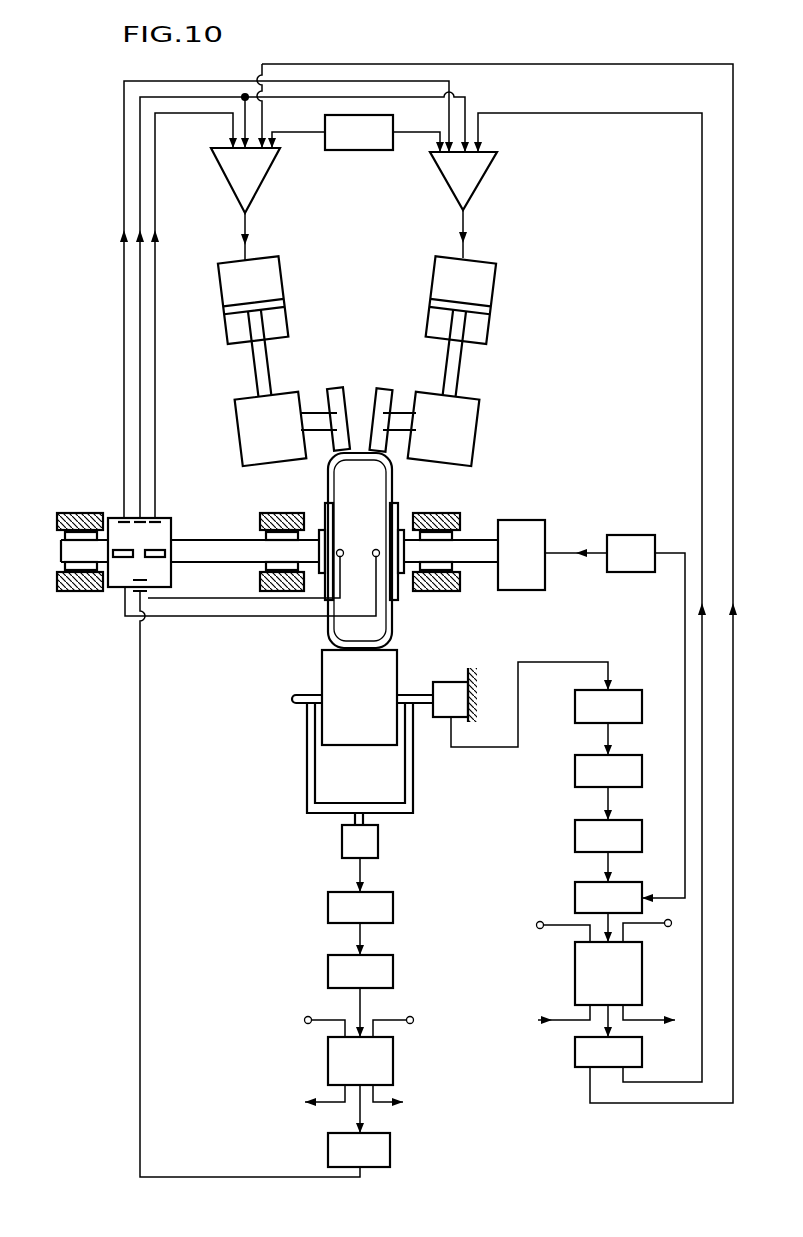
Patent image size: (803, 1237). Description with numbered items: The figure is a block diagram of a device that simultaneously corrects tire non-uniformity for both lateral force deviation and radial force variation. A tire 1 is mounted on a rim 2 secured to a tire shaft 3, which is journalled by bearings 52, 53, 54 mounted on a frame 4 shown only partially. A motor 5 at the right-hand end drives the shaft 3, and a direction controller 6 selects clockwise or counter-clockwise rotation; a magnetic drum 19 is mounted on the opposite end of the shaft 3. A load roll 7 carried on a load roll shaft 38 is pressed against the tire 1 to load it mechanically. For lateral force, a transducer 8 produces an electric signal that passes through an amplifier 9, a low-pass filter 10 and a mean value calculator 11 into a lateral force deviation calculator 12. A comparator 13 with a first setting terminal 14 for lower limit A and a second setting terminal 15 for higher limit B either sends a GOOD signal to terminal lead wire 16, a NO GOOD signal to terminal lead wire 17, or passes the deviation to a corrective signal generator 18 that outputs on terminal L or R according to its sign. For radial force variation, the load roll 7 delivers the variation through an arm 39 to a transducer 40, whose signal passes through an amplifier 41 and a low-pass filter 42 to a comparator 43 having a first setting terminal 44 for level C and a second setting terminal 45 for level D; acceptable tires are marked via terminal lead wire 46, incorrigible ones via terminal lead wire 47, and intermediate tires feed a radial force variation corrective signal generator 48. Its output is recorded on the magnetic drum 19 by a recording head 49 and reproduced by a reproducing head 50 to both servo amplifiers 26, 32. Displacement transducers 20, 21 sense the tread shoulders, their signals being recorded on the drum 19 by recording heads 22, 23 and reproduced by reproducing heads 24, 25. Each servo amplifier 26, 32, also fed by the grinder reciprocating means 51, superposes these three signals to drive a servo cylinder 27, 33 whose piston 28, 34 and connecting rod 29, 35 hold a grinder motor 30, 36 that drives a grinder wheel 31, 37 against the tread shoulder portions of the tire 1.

The tire 1 is at (387, 478).
The rim 2 is at (395, 598).
The tire shaft 3 is at (238, 545).
The frame 4 is at (75, 518).
The motor 5 is at (525, 590).
The direction controller 6 is at (636, 572).
The load roll 7 is at (397, 667).
The transducer 8 is at (450, 682).
The amplifier 9 is at (575, 713).
The low-pass filter 10 is at (575, 772).
The mean value calculator 11 is at (580, 828).
The lateral force deviation calculator 12 is at (580, 890).
The comparator 13 is at (575, 975).
The first setting terminal 14 is at (535, 930).
The second setting terminal 15 is at (665, 928).
The terminal lead wire 16 is at (538, 1020).
The terminal lead wire 17 is at (670, 1022).
The corrective signal generator 18 is at (578, 1063).
The magnetic drum 19 is at (165, 580).
The displacement transducer 20 is at (340, 550).
The displacement transducer 21 is at (374, 557).
The recording head 22 is at (118, 558).
The recording head 23 is at (160, 552).
The reproducing head 24 is at (122, 516).
The reproducing head 25 is at (152, 516).
The servo amplifier 26 is at (262, 172).
The servo cylinder 27 is at (275, 275).
The piston 28 is at (280, 320).
The connecting rod 29 is at (252, 360).
The grinder motor 30 is at (240, 420).
The grinder wheel 31 is at (333, 392).
The servo amplifier 32 is at (483, 170).
The servo cylinder 33 is at (430, 270).
The piston 34 is at (430, 318).
The connecting rod 35 is at (458, 372).
The grinder motor 36 is at (480, 428).
The grinder wheel 37 is at (380, 392).
The load roll shaft 38 is at (428, 704).
The arm 39 is at (408, 787).
The transducer 40 is at (378, 846).
The amplifier 41 is at (387, 898).
The low-pass filter 42 is at (388, 965).
The comparator 43 is at (393, 1060).
The first setting terminal 44 is at (305, 1025).
The second setting terminal 45 is at (412, 1025).
The terminal lead wire 46 is at (305, 1100).
The terminal lead wire 47 is at (400, 1100).
The radial force variation corrective signal generator 48 is at (390, 1150).
The recording head 49 is at (143, 594).
The reproducing head 50 is at (140, 516).
The grinder reciprocating means 51 is at (352, 150).
The bearing 52 is at (440, 572).
The bearing 53 is at (275, 572).
The bearing 54 is at (82, 570).